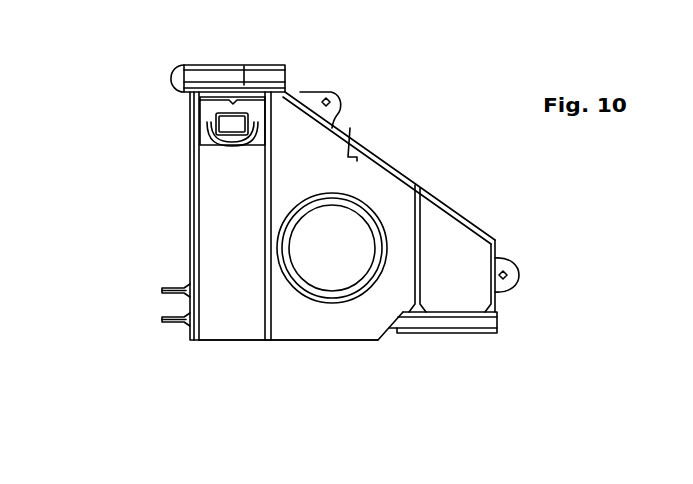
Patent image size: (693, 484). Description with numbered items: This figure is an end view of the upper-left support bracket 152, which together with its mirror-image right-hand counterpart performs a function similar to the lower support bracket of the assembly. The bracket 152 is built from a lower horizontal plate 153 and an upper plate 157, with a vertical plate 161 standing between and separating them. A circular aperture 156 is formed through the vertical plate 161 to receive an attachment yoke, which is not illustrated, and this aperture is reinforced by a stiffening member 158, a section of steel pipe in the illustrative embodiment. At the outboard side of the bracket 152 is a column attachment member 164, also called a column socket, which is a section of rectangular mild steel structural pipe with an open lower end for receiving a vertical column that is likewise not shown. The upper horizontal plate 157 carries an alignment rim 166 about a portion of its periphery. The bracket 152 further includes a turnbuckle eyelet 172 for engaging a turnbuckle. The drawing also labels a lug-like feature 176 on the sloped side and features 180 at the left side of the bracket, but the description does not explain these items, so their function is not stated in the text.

The upper-left support bracket 152 is at (490, 113).
The lower horizontal plate 153 is at (454, 335).
The circular aperture 156 is at (333, 208).
The upper plate 157 is at (244, 66).
The stiffening member 158 is at (355, 195).
The vertical plate 161 is at (350, 128).
The column attachment member 164 is at (228, 341).
The alignment rim 166 is at (187, 64).
The turnbuckle eyelet 172 is at (518, 284).
The upper mounting lug 176 is at (331, 92).
The latch tabs 180 is at (212, 146).